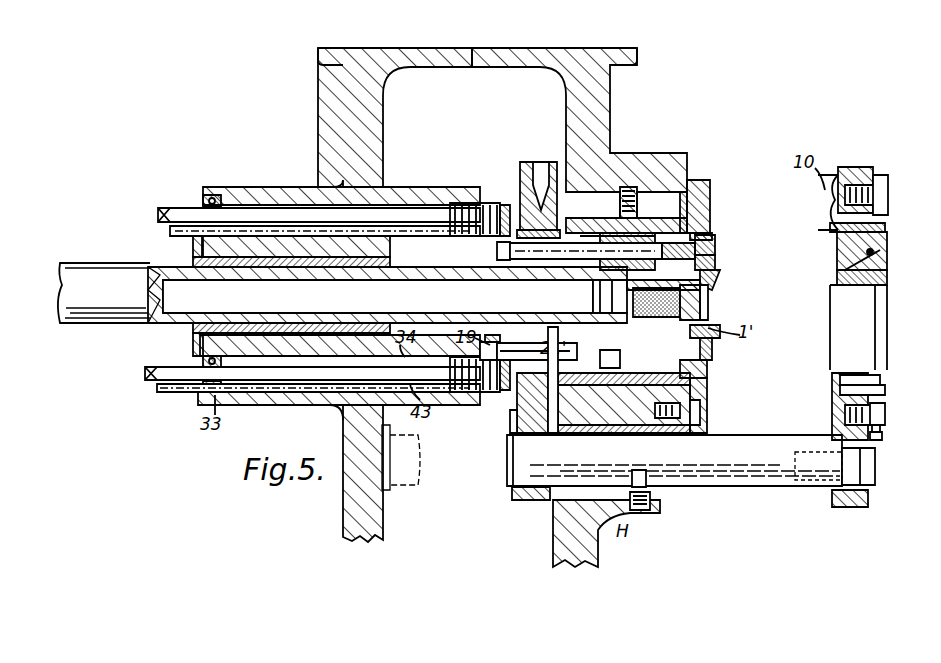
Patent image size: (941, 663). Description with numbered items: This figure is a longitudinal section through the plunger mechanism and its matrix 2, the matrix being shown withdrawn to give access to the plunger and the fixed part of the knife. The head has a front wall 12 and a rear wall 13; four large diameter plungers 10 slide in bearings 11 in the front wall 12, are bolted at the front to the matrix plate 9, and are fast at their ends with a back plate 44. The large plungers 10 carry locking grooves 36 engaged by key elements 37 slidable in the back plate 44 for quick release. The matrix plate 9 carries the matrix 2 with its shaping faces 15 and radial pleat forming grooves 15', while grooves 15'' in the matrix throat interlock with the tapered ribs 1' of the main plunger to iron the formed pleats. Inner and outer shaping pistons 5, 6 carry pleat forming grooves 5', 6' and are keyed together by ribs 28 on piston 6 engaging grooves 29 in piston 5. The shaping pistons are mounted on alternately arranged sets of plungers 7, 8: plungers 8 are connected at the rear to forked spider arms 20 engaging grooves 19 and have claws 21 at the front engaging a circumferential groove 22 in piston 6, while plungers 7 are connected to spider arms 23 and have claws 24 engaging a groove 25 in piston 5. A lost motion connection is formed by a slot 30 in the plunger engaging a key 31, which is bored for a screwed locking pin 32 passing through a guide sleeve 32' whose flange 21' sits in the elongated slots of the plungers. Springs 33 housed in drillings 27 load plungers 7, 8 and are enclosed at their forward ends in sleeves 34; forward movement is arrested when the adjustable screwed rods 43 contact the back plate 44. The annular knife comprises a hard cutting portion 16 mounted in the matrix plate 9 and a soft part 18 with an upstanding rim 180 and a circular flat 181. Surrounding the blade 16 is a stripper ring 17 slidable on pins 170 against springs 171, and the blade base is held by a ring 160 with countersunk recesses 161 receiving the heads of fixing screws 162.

The tapered ribs 1' is at (730, 302).
The matrix 2 is at (830, 310).
The inner shaping piston 5 is at (725, 278).
The pleat forming grooves 5' is at (729, 343).
The outer shaping piston 6 is at (734, 238).
The pleat forming grooves 6' is at (735, 254).
The plungers 7 is at (520, 375).
The plungers 8 is at (708, 215).
The matrix plate 9 is at (840, 167).
The large diameter plungers 10 is at (730, 470).
The bearings 11 is at (590, 512).
The front wall 12 is at (580, 118).
The rear wall 13 is at (375, 148).
The shaping faces 15 is at (882, 251).
The radial pleat forming grooves 15' is at (843, 268).
The grooves 15'' is at (841, 284).
The knife portion 16 is at (832, 233).
The stripper ring 17 is at (832, 400).
The soft part of the knife 18 is at (695, 180).
The circular flat 181 is at (700, 188).
The upstanding lip or rim 180 is at (700, 240).
The grooves 19 is at (505, 257).
The spider arms 20 is at (497, 250).
The claws 21 is at (607, 254).
The flange 21' is at (603, 236).
The circumferential groove 22 is at (700, 312).
The spider arms 23 is at (480, 362).
The claws 24 is at (708, 380).
The groove 25 is at (712, 355).
The drillings 27 is at (288, 187).
The ribs 28 is at (590, 301).
The grooves 29 is at (706, 290).
The slot 30 is at (387, 295).
The key 31 is at (572, 378).
The screwed locking pin 32 is at (597, 359).
The guide sleeve 32' is at (700, 405).
The springs 33 is at (225, 195).
The sleeves 34 is at (420, 200).
The locking grooves 36 is at (640, 470).
The key elements 37 is at (537, 165).
The adjustable screwed rods 43 is at (180, 212).
The back plate 44 is at (520, 170).
The ring 160 is at (875, 440).
The countersunk recesses 161 is at (880, 430).
The fixing screws 162 is at (885, 413).
The pins 170 is at (880, 380).
The springs 171 is at (880, 390).